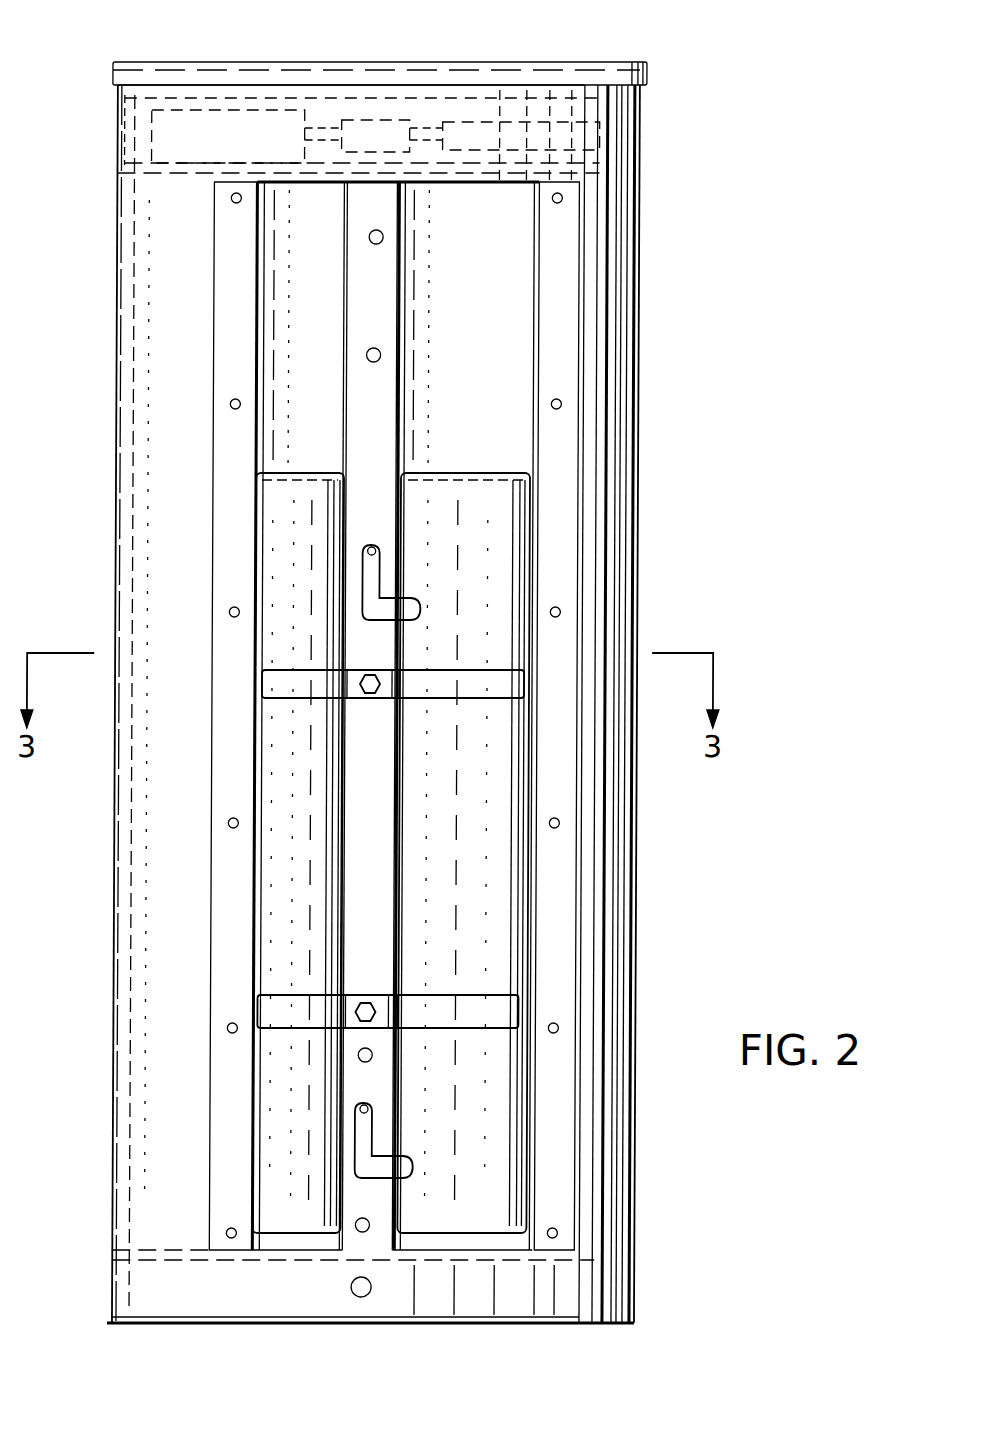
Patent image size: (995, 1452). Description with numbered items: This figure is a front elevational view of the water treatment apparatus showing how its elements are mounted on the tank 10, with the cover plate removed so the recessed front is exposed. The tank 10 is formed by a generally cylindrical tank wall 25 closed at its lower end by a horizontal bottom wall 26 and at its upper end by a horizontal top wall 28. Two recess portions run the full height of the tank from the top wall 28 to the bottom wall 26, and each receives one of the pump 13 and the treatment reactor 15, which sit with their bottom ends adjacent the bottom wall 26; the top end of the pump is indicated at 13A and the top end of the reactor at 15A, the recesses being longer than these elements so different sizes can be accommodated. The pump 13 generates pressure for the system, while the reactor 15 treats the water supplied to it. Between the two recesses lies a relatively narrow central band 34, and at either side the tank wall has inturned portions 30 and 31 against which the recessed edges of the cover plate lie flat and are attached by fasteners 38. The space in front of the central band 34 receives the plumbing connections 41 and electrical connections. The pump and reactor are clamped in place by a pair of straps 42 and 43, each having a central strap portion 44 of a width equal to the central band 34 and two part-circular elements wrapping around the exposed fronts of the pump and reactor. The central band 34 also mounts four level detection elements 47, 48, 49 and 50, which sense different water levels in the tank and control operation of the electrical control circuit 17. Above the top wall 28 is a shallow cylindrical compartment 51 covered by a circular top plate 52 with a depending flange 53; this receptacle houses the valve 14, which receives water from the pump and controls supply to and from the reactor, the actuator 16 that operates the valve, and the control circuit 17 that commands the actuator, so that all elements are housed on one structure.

The tank 10 is at (645, 535).
The pump 13 is at (468, 855).
The top end of the pump 13A is at (500, 473).
The valve 14 is at (225, 108).
The reactor 15 is at (295, 855).
The top end of the reactor 15A is at (310, 473).
The actuator 16 is at (375, 120).
The electrical control circuit 17 is at (510, 120).
The tank wall 25 is at (135, 990).
The bottom wall 26 is at (160, 1250).
The top wall 28 is at (185, 175).
The inturned portion 30 is at (230, 705).
The inturned portion 31 is at (555, 895).
The central band 34 is at (375, 300).
The fasteners 38 is at (237, 605).
The plumbing connections 41 is at (390, 585).
The strap 42 is at (445, 670).
The strap 43 is at (470, 995).
The central strap portion 44 is at (380, 700).
The level detection element 47 is at (383, 243).
The level detection element 48 is at (382, 355).
The level detection element 49 is at (377, 1058).
The level detection element 50 is at (365, 1232).
The compartment 51 is at (193, 97).
The top plate 52 is at (612, 60).
The depending flange 53 is at (650, 72).